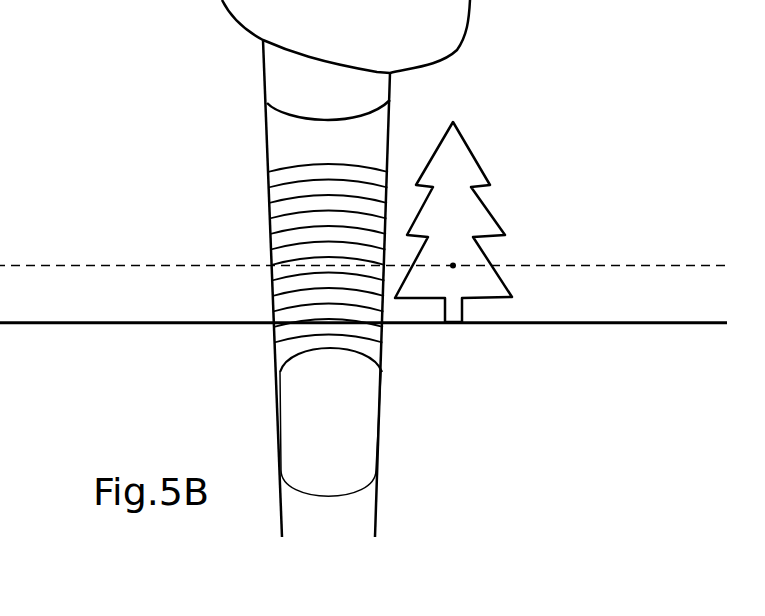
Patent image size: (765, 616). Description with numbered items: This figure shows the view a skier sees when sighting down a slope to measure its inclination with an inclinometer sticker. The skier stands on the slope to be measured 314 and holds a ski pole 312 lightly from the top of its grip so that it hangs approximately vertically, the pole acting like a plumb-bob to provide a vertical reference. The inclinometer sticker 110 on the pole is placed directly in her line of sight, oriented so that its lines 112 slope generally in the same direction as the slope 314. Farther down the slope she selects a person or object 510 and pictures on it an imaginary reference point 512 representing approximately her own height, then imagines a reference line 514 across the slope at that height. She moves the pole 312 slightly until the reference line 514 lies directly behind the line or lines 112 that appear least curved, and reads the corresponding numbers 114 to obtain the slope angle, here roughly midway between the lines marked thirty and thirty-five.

The inclinometer sticker 110 is at (362, 428).
The lines 112 is at (310, 259).
The numbers 114 is at (300, 240).
The ski pole 312 is at (212, 93).
The slope to be measured 314 is at (77, 327).
The person or object 510 is at (467, 143).
The imaginary reference point 512 is at (458, 253).
The imaginary reference line 514 is at (92, 265).